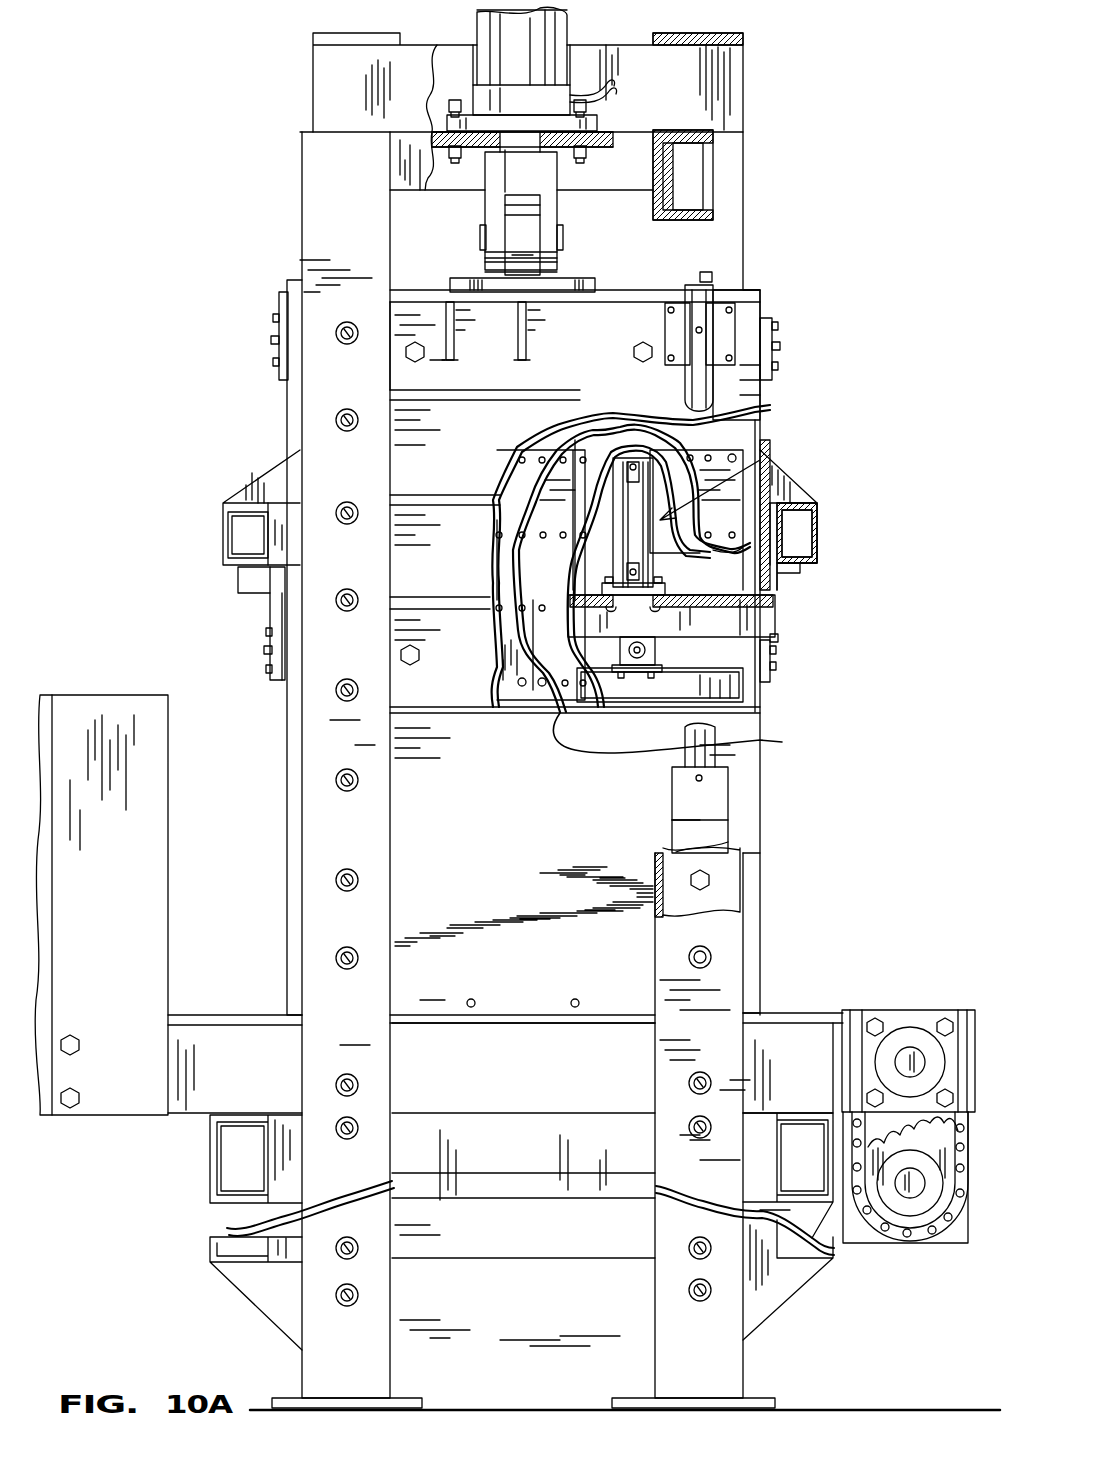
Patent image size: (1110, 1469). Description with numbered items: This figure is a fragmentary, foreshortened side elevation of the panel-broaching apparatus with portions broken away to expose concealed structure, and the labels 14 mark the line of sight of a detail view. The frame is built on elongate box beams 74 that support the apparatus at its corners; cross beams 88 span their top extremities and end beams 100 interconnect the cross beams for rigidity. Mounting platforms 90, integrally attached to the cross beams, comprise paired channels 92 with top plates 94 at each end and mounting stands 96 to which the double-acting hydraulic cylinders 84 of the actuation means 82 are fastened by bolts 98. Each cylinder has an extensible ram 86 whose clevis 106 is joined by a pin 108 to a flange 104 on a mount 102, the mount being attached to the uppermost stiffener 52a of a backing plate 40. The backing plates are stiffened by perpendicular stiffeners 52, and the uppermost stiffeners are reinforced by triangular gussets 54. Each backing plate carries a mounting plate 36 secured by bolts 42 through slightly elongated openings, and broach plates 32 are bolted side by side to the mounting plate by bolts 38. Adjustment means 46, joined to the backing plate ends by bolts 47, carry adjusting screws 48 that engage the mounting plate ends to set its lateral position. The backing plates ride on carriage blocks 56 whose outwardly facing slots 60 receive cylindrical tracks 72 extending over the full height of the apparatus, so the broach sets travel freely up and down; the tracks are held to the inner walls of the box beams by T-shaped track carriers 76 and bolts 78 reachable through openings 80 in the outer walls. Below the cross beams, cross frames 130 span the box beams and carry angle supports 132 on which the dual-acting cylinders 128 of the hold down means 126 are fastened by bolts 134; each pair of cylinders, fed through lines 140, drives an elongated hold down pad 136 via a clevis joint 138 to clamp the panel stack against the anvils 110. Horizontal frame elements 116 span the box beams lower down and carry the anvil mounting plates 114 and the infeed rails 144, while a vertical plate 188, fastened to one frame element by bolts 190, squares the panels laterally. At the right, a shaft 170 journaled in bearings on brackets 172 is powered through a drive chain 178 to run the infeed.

The strip material 14 is at (584, 180).
The broach plates 32 is at (678, 445).
The mounting plates 36 is at (540, 712).
The bolts 38 is at (532, 468).
The backing plates 40 is at (440, 320).
The bolts 42 is at (417, 362).
The adjustment means 46 is at (279, 322).
The bolts 47 is at (273, 318).
The adjusting screws 48 is at (271, 342).
The stiffeners 52 is at (462, 400).
The uppermost stiffeners 52a is at (432, 322).
The triangular gussets 54 is at (455, 340).
The carriage blocks 56 is at (735, 310).
The outwardly facing slots 60 is at (700, 350).
The cylindrical tracks 72 is at (700, 288).
The box beams 74 is at (382, 1204).
The track carriers 76 is at (718, 818).
The bolts 78 is at (337, 510).
The openings 80 is at (337, 778).
The drive shaft 82 is at (585, 62).
The hydraulic cylinders 84 is at (568, 28).
The rams 86 is at (480, 188).
The cross beams 88 is at (714, 186).
The mounting platforms 90 is at (757, 80).
The channels 92 is at (410, 52).
The top plates 94 is at (355, 40).
The mounting stands 96 is at (475, 62).
The bolts 98 is at (455, 88).
The end beams 100 is at (405, 182).
The mounts 102 is at (597, 288).
The flanges 104 is at (490, 262).
The clevises 106 is at (545, 255).
The pins 108 is at (563, 236).
The anvils 110 is at (612, 88).
The mounting plates 114 is at (760, 1020).
The horizontal frame elements 116 is at (210, 1100).
The hold down means 126 is at (746, 482).
The hydraulic cylinders 128 is at (645, 540).
The cross frames 130 is at (223, 532).
The angle supports 132 is at (755, 616).
The bolts 134 is at (650, 580).
The hold down pad 136 is at (715, 690).
The clevis joint 138 is at (652, 645).
The lines 140 is at (620, 465).
The bar 144 is at (215, 1020).
The shaft 170 is at (912, 1057).
The brackets 172 is at (890, 1020).
The drive chain 178 is at (926, 1237).
The vertical plate 188 is at (150, 795).
The bolts 190 is at (80, 1058).